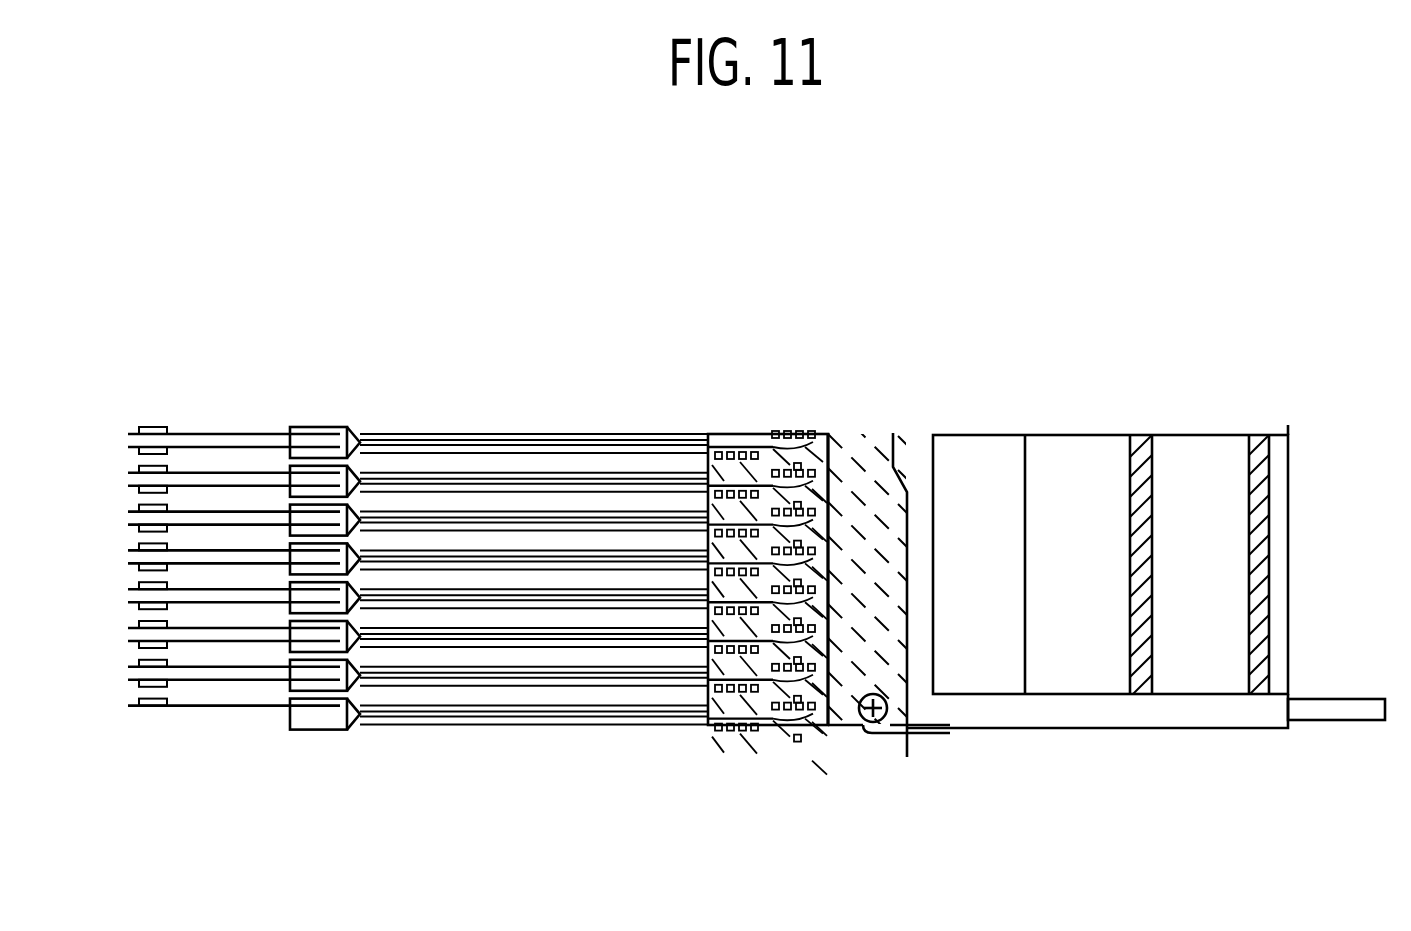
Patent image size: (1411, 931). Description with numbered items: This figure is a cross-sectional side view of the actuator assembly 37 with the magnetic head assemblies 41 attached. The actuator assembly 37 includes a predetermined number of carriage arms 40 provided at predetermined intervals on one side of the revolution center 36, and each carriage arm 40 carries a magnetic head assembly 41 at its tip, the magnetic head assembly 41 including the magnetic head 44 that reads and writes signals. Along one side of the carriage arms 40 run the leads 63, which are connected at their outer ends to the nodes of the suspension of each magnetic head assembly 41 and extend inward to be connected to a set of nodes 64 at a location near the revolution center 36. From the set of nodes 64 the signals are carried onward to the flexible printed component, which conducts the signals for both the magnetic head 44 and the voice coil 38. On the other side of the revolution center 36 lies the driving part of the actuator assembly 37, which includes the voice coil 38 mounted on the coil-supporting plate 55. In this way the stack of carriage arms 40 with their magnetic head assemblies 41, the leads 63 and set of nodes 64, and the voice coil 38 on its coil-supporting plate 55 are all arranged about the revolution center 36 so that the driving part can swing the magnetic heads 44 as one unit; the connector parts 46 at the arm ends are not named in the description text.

The actuator assembly 37 is at (766, 263).
The magnetic head assemblies 41 is at (214, 428).
The magnetic head 44 is at (152, 426).
The connectors 46 is at (318, 427).
The carriage arms 40 is at (530, 431).
The leads 63 is at (702, 546).
The set of nodes 64 is at (780, 426).
The revolution center 36 is at (868, 437).
The voice coil 38 is at (1272, 544).
The coil-supporting plate 55 is at (1207, 714).